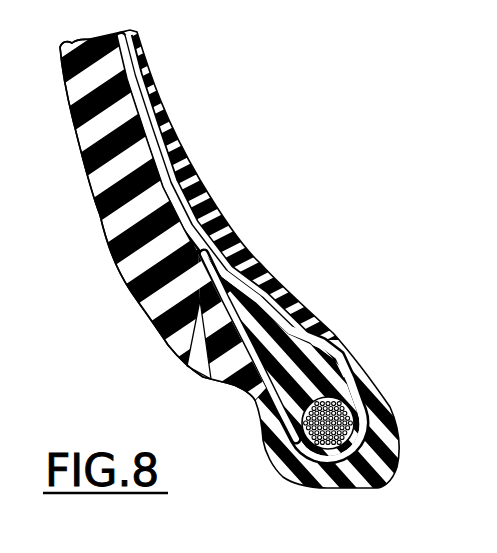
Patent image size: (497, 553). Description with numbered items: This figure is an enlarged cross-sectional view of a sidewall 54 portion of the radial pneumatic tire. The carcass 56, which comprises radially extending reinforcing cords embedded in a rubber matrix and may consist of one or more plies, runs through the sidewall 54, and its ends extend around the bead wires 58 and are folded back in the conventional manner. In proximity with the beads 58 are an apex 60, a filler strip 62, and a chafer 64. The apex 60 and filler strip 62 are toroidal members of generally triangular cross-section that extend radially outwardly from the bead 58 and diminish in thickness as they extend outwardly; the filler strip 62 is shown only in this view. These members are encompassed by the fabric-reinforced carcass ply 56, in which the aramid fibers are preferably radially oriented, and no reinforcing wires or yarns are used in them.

The sidewall 54 is at (103, 209).
The carcass 56 is at (138, 113).
The bead wire 58 is at (350, 423).
The apex 60 is at (293, 334).
The filler strip 62 is at (290, 382).
The chafer 64 is at (232, 378).